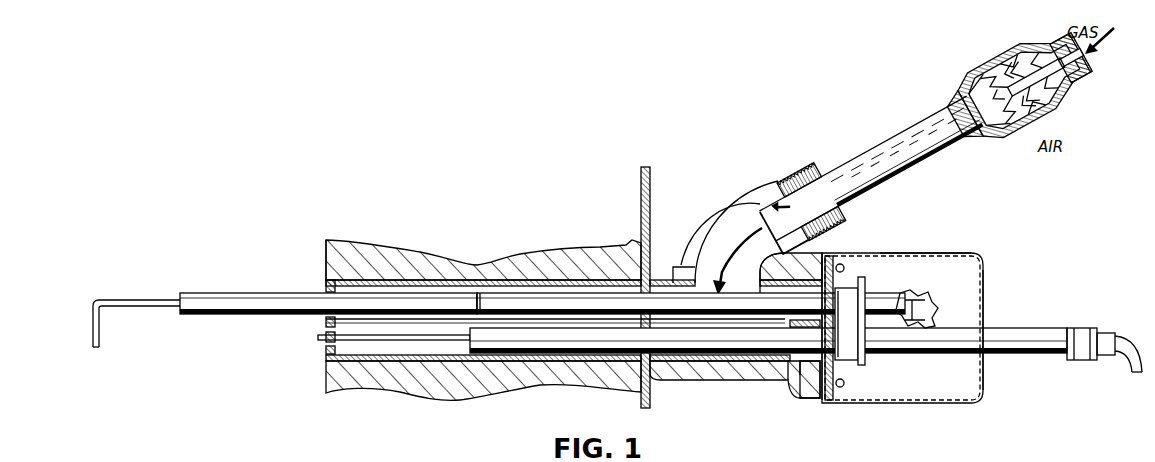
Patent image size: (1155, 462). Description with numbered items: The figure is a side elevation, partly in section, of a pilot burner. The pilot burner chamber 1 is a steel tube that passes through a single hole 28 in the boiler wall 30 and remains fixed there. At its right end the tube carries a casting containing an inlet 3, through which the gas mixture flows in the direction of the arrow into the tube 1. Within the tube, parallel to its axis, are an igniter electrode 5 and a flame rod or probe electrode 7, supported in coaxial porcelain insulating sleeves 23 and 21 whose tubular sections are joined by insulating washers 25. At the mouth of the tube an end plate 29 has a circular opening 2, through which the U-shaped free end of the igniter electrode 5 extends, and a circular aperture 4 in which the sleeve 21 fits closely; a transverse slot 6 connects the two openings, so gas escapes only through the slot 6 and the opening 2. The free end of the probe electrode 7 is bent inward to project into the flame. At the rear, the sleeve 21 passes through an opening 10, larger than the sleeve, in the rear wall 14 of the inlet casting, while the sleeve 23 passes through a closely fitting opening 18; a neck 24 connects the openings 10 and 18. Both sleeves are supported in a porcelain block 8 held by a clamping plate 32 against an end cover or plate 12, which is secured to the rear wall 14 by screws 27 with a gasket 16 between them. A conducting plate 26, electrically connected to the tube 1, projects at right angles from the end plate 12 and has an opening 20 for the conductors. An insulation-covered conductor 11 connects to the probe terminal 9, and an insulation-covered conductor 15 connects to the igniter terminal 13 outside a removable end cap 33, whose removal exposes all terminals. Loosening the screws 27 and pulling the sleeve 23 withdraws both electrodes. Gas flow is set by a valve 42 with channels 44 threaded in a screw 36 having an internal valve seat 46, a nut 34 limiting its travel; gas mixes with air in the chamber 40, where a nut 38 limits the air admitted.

The pilot burner chamber 1 is at (380, 252).
The circular opening 2 is at (323, 348).
The inlet 3 is at (748, 214).
The circular aperture 4 is at (322, 294).
The igniter electrode 5 is at (323, 340).
The transverse slot 6 is at (320, 318).
The flame rod or probe electrode 7 is at (100, 336).
The porcelain block 8 is at (860, 290).
The electric terminal 9 is at (926, 304).
The opening 10 is at (815, 265).
The insulation-covered conductor 11 is at (928, 314).
The end cover or plate 12 is at (833, 398).
The electric terminal 13 is at (1120, 360).
The rear wall 14 is at (813, 392).
The insulation-covered conductor 15 is at (1120, 343).
The gasket 16 is at (828, 400).
The opening 18 is at (805, 370).
The opening 20 is at (985, 258).
The insulating sleeve 21 is at (566, 295).
The insulating sleeve 23 is at (555, 353).
The neck 24 is at (840, 340).
The insulating washers 25 is at (480, 293).
The conducting plate 26 is at (966, 284).
The screws 27 is at (844, 265).
The hole 28 is at (322, 282).
The end plate 29 is at (322, 290).
The boiler wall 30 is at (337, 242).
The clamping plate 32 is at (865, 292).
The end cap 33 is at (935, 254).
The nut 34 is at (1048, 62).
The screw 36 is at (1030, 140).
The nut 38 is at (1000, 137).
The chamber 40 is at (898, 131).
The valve 42 is at (1072, 82).
The channels 44 is at (998, 116).
The internal valve seat 46 is at (978, 120).